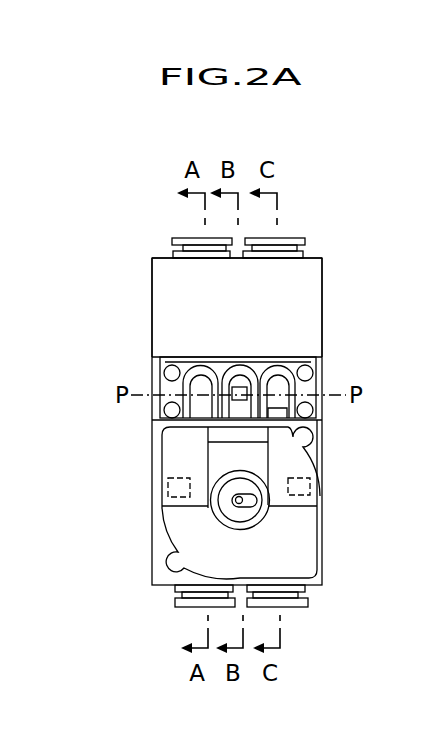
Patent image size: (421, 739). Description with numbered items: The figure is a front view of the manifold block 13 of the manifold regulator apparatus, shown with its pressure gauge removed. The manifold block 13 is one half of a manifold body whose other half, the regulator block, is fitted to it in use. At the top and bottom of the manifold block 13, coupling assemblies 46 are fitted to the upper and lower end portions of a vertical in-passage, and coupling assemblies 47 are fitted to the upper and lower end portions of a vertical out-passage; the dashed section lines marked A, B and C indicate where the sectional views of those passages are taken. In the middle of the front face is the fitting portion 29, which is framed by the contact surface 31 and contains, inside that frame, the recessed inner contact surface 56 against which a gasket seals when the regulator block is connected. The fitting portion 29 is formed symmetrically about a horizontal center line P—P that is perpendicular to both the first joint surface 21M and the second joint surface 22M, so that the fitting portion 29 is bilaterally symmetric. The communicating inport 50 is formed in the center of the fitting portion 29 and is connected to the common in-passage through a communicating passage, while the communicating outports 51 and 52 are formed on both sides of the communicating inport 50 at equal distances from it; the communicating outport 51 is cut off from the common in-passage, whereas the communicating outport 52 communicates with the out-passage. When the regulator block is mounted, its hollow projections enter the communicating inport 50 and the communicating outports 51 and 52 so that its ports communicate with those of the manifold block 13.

The manifold block 13 is at (150, 591).
The first joint surface 21M is at (152, 292).
The second joint surface 22M is at (322, 283).
The fitting portion 29 is at (261, 358).
The contact surface 31 is at (292, 357).
The coupling assemblies 46 is at (164, 230).
The coupling assemblies 47 is at (312, 230).
The communicating inport 50 is at (240, 425).
The communicating outport 51 is at (198, 410).
The communicating outport 52 is at (299, 408).
The inner contact surface 56 is at (309, 401).